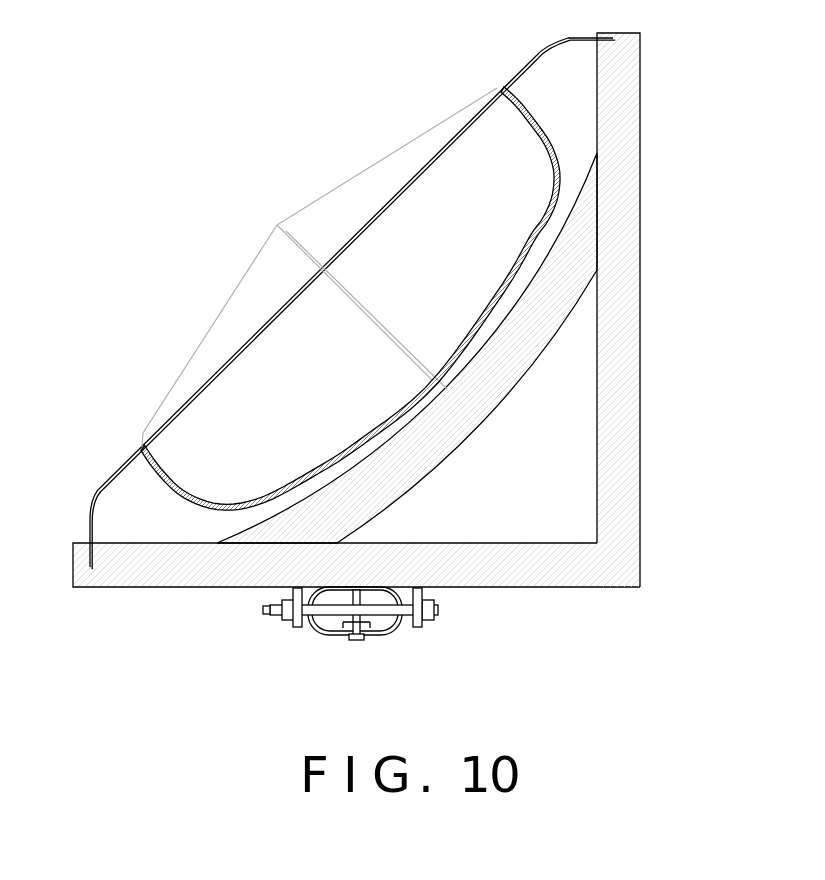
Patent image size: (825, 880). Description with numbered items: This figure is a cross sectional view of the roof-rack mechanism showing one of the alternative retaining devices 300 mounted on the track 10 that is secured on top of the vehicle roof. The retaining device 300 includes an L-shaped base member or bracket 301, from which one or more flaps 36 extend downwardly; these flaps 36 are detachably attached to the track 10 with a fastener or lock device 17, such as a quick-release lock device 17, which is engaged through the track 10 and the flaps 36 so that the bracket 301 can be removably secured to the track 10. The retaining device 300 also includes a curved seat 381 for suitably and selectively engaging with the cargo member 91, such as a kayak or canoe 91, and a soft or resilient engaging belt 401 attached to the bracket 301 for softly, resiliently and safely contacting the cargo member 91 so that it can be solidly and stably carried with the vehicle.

The track 10 is at (313, 637).
The quick-release lock device 17 is at (263, 612).
The flap 36 is at (417, 627).
The kayak 91 is at (323, 220).
The retaining device 300 is at (438, 310).
The L-shaped bracket 301 is at (615, 487).
The curved seat 381 is at (500, 381).
The engaging belt 401 is at (525, 63).